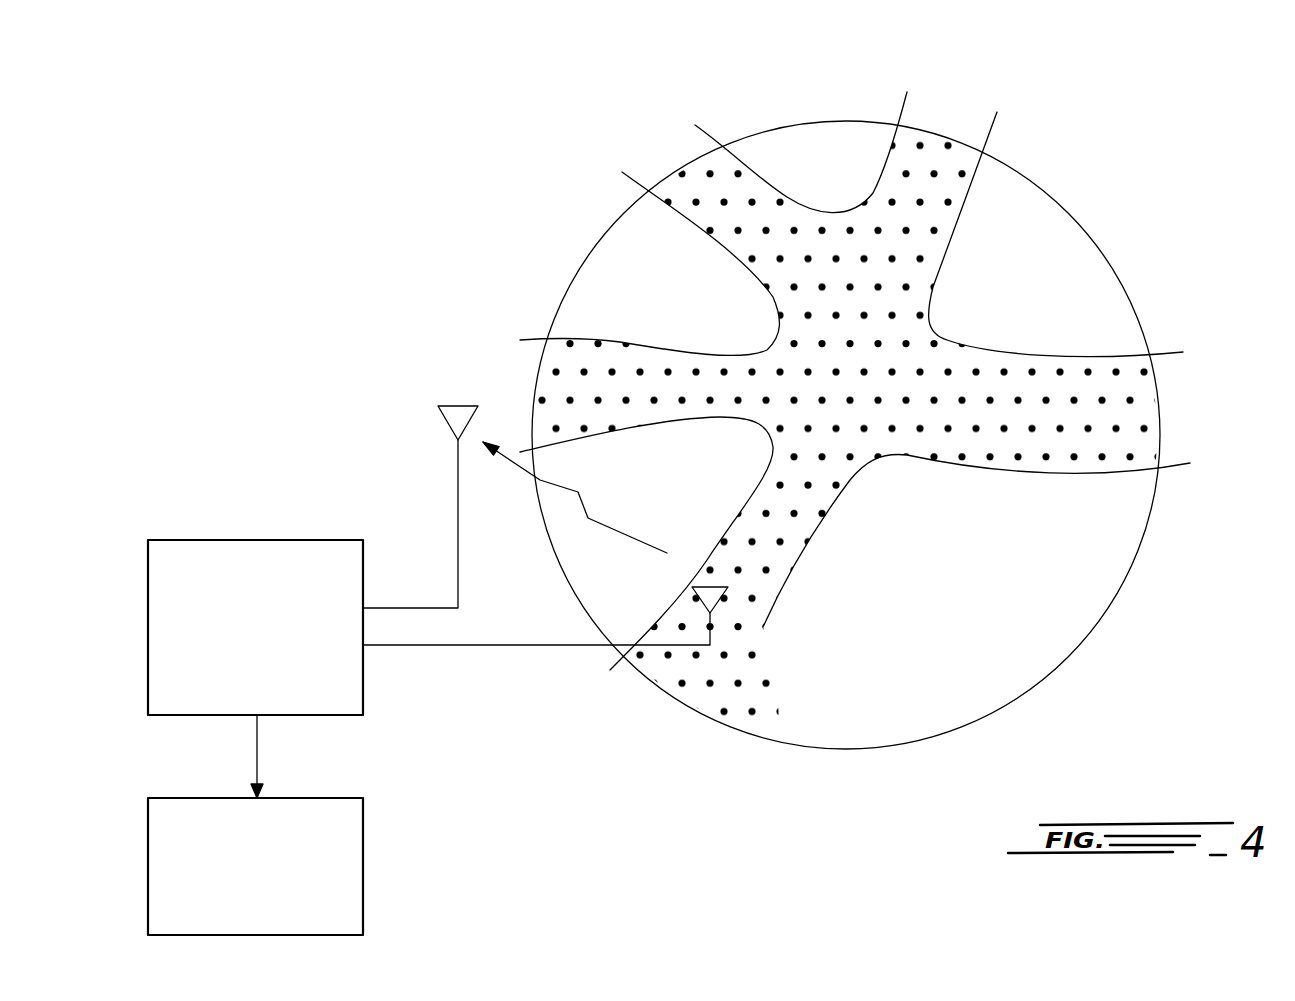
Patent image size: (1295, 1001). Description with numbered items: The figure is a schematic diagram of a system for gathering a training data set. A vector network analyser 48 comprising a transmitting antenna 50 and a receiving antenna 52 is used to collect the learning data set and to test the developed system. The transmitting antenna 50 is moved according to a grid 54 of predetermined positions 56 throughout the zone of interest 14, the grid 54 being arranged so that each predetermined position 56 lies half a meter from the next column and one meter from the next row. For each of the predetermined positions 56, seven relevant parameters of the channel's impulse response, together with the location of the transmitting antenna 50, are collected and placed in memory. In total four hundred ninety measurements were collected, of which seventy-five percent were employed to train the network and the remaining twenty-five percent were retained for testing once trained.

The zone of interest 14 is at (1072, 215).
The vector network analyser 48 is at (233, 540).
The transmitting antenna 50 is at (715, 608).
The receiving antenna 52 is at (457, 405).
The grid 54 is at (863, 258).
The predetermined positions 56 is at (148, 848).